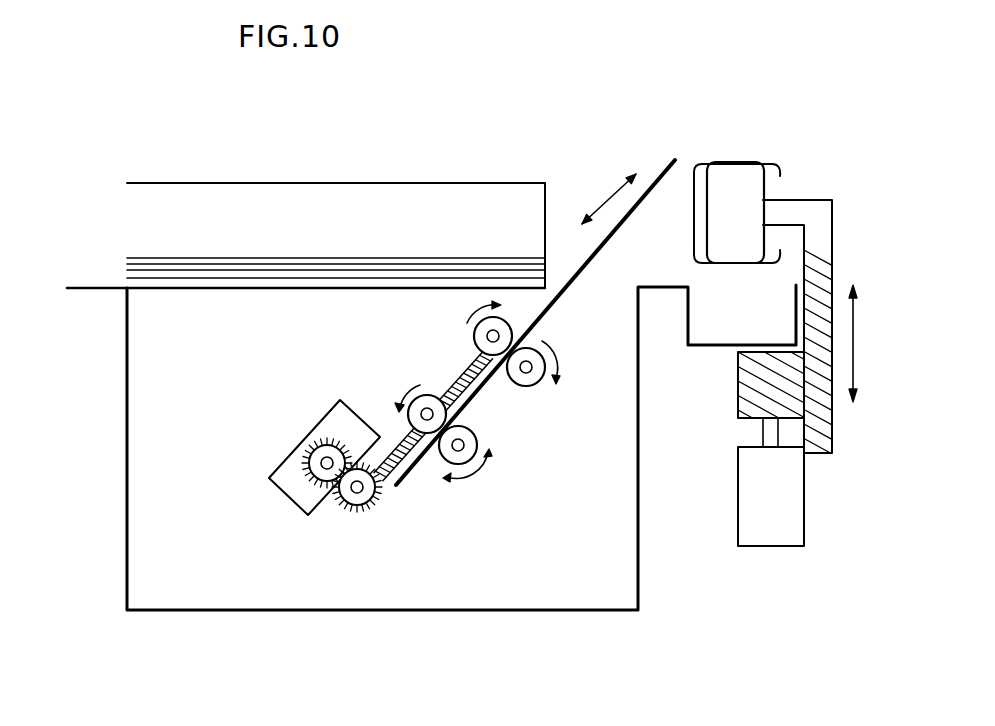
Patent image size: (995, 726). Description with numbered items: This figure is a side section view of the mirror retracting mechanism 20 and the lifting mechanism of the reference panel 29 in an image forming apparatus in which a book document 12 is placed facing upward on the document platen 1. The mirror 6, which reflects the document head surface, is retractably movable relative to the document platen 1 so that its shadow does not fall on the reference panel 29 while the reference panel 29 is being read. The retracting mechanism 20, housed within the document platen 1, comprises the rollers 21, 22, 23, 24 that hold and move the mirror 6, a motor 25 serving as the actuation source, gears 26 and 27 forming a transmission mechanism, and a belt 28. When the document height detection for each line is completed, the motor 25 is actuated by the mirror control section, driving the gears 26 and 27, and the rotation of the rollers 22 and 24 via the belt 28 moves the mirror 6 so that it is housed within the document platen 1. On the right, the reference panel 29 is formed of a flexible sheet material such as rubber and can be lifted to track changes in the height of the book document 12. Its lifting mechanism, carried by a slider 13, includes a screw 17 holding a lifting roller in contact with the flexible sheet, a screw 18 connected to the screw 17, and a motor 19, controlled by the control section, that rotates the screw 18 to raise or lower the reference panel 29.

The document platen 1 is at (85, 287).
The mirror 6 is at (657, 178).
The book document 12 is at (352, 213).
The slider 13 is at (742, 178).
The screw 17 is at (820, 398).
The screw 18 is at (757, 367).
The motor 19 is at (763, 498).
The retracting mechanism 20 is at (323, 580).
The roller 21 is at (480, 447).
The roller 22 is at (407, 417).
The roller 23 is at (528, 388).
The roller 24 is at (474, 335).
The motor 25 is at (292, 502).
The gear 26 is at (300, 449).
The gear 27 is at (368, 505).
The belt 28 is at (453, 372).
The reference panel 29 is at (703, 163).